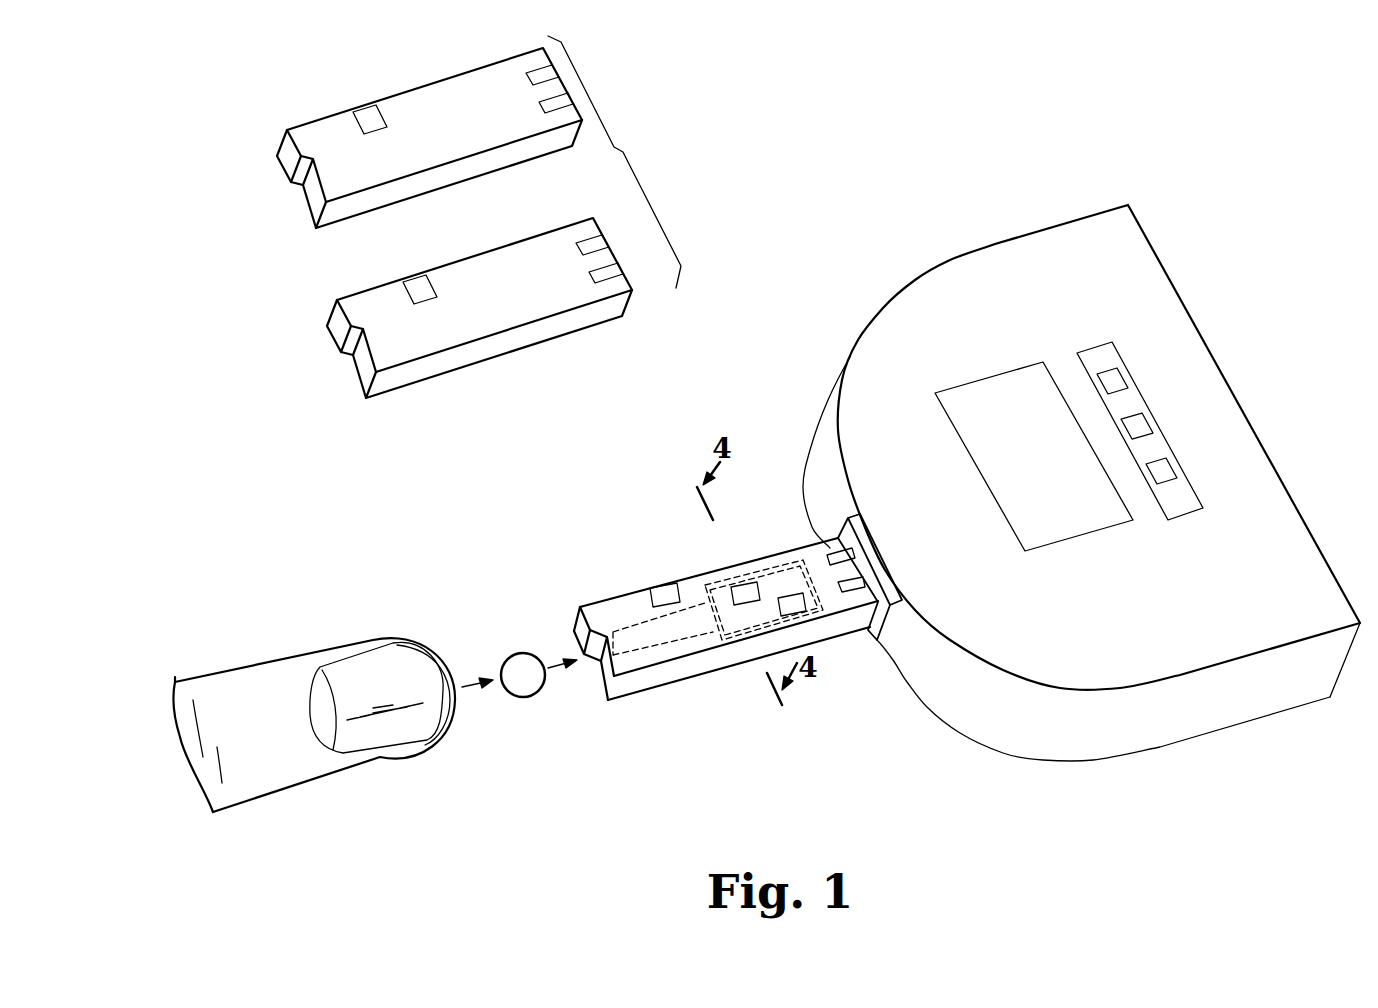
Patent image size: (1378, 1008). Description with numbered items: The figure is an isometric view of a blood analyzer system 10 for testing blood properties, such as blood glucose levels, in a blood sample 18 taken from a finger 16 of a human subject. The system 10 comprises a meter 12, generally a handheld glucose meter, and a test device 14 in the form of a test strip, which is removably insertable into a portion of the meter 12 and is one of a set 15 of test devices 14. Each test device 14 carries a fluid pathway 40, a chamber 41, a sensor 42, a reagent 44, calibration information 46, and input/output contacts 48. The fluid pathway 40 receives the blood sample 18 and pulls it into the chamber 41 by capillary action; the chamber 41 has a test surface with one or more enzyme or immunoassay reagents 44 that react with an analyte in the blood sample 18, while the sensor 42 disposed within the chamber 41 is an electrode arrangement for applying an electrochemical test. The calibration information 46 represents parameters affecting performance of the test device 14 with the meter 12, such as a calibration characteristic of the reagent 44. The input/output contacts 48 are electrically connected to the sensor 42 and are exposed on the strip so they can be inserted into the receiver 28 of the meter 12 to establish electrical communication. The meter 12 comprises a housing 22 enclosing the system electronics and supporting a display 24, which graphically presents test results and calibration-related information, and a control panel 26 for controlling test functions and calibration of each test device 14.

The system 10 is at (688, 458).
The meter 12 is at (1071, 483).
The test device 14 is at (470, 68).
The set of test devices 15 is at (614, 162).
The finger 16 is at (333, 646).
The blood sample 18 is at (517, 653).
The housing 22 is at (1103, 729).
The display 24 is at (1085, 548).
The control panel 26 is at (1183, 518).
The receiver 28 is at (878, 642).
The fluid pathway 40 is at (648, 638).
The chamber 41 is at (733, 642).
The sensor 42 is at (795, 614).
The reagent 44 is at (747, 583).
The calibration information 46 is at (366, 112).
The input/output contacts 48 is at (840, 543).